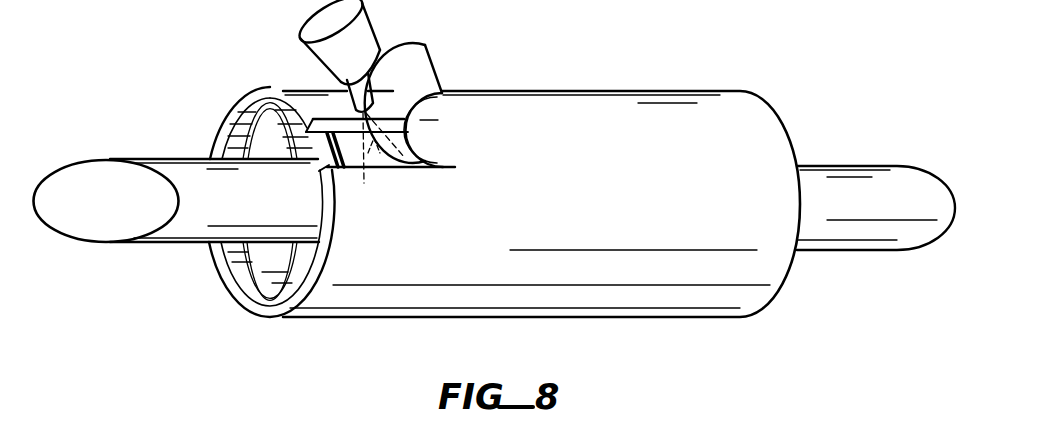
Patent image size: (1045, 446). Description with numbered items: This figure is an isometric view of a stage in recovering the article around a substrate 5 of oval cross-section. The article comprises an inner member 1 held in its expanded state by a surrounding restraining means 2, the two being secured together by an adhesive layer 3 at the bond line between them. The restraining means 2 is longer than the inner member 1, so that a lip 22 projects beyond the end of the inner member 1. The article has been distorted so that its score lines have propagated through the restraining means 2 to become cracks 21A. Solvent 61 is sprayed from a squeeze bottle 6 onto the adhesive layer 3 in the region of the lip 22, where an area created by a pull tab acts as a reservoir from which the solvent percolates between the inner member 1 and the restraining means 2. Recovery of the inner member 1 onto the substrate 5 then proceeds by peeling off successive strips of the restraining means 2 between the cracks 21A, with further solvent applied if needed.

The inner member 1 is at (255, 283).
The restraining means 2 is at (765, 137).
The adhesive layer 3 is at (247, 253).
The substrate 5 is at (858, 232).
The squeeze bottle 6 is at (299, 24).
The cracks 21A is at (327, 118).
The lip 22 is at (221, 143).
The solvent 61 is at (367, 175).